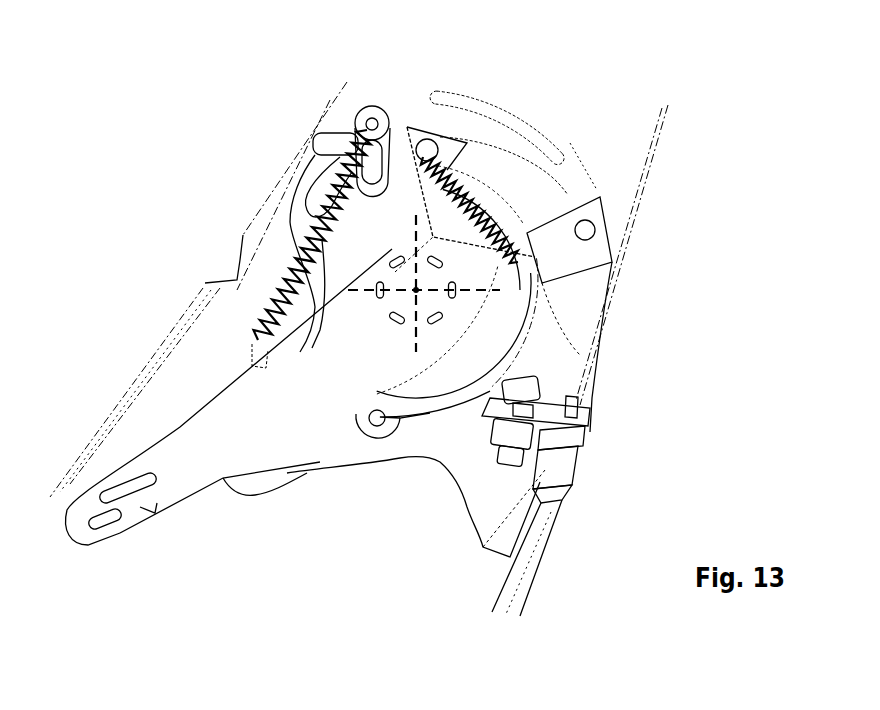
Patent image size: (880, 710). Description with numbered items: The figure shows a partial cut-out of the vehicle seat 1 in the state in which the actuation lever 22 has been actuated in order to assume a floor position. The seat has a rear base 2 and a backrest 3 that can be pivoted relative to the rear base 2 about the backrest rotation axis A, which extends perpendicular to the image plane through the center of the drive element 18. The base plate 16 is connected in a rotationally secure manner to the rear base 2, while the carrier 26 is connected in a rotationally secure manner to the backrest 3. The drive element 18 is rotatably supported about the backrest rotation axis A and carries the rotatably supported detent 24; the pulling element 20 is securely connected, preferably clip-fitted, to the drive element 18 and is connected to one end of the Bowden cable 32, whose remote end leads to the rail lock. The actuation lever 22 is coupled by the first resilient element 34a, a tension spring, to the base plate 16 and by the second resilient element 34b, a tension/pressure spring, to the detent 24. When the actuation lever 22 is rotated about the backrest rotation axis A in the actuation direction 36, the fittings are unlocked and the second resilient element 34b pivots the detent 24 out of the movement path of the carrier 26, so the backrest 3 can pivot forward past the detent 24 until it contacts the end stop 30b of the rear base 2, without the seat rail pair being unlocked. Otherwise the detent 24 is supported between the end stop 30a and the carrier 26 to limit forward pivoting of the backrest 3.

The vehicle seat 1 is at (147, 171).
The rear base 2 is at (311, 609).
The backrest 3 is at (526, 51).
The base plate 16 is at (582, 413).
The drive element 18 is at (523, 332).
The pulling element 20 is at (583, 353).
The actuation lever 22 is at (248, 425).
The detent 24 is at (444, 146).
The carrier 26 is at (515, 120).
The end stop 30a is at (303, 163).
The end stop 30b is at (210, 284).
The Bowden cable 32 is at (567, 465).
The first resilient element 34a is at (308, 231).
The second resilient element 34b is at (487, 214).
The actuation direction 36 is at (183, 428).
The backrest rotation axis A is at (418, 290).